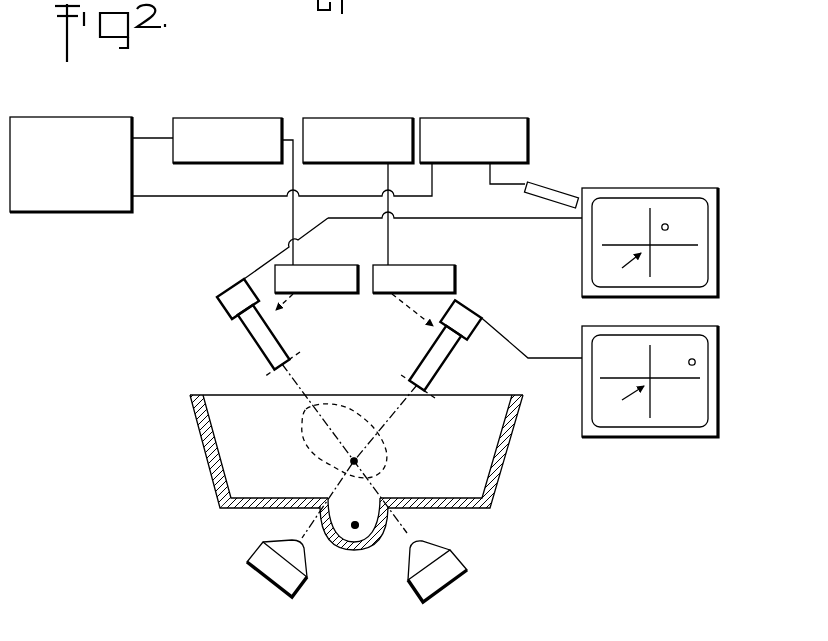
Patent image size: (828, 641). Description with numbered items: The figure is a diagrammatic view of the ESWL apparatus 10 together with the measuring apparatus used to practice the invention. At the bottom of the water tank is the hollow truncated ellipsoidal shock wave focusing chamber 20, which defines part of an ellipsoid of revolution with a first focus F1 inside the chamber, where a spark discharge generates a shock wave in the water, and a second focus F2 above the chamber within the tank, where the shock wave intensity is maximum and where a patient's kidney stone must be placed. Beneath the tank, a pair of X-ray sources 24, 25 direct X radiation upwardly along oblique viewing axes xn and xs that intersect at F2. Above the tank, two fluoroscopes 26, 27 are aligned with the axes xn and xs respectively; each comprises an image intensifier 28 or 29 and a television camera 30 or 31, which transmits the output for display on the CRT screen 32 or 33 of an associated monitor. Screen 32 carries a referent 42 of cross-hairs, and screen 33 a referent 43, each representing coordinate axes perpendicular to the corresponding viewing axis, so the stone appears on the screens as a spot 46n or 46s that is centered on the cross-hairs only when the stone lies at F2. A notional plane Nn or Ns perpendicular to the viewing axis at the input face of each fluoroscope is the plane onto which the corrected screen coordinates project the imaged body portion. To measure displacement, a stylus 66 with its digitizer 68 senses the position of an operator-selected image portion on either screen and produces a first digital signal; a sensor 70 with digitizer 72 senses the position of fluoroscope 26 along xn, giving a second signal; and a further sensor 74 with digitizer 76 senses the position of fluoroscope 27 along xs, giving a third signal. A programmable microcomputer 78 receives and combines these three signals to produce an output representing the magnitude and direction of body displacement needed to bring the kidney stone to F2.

The ESWL apparatus 10 is at (217, 374).
The shock wave focusing chamber 20 is at (343, 548).
The X-ray source 24 is at (446, 560).
The X-ray source 25 is at (256, 553).
The fluoroscope 26 is at (241, 334).
The fluoroscope 27 is at (458, 351).
The image intensifier 28 is at (276, 326).
The image intensifier 29 is at (436, 331).
The television camera 30 is at (229, 288).
The television camera 31 is at (472, 305).
The CRT screen 32 is at (613, 207).
The CRT screen 33 is at (676, 420).
The referent 42 is at (619, 266).
The referent 43 is at (621, 399).
The spot 46n is at (668, 224).
The spot 46s is at (692, 358).
The stylus 66 is at (553, 184).
The digitizer 68 is at (467, 117).
The sensor 70 is at (333, 264).
The digitizer 72 is at (225, 118).
The sensor 74 is at (418, 264).
The digitizer 76 is at (349, 117).
The programmable microcomputer 78 is at (85, 109).
The first focus F1 is at (358, 526).
The second focus F2 is at (358, 460).
The notional plane Nn is at (303, 354).
The notional plane Ns is at (396, 375).
The viewing axis xn is at (302, 409).
The viewing axis xs is at (394, 415).